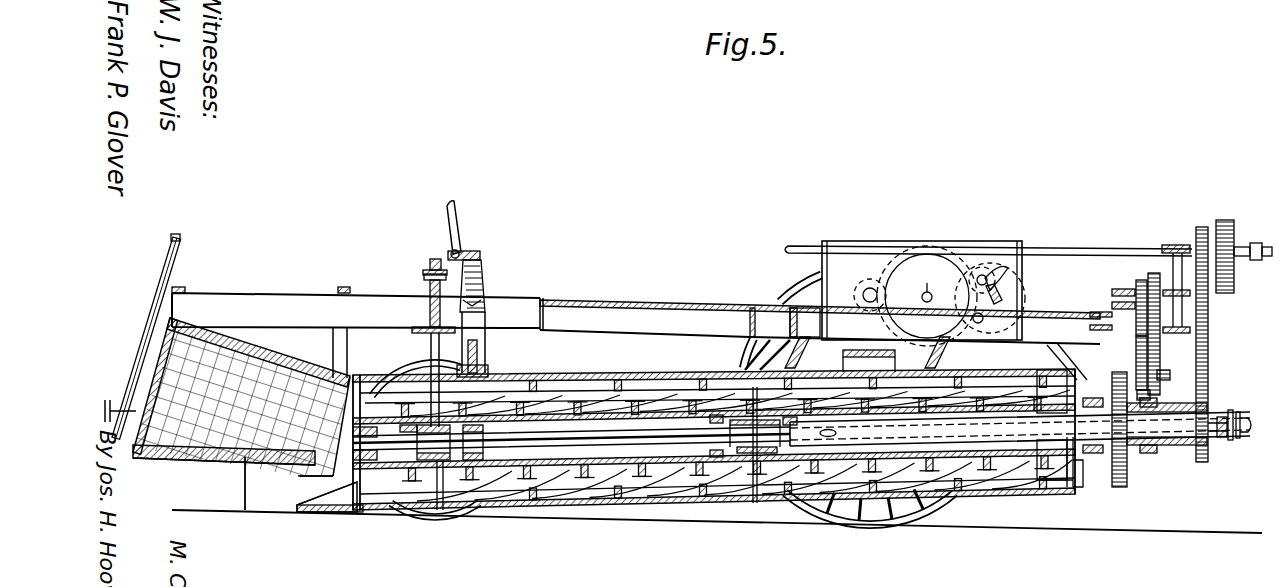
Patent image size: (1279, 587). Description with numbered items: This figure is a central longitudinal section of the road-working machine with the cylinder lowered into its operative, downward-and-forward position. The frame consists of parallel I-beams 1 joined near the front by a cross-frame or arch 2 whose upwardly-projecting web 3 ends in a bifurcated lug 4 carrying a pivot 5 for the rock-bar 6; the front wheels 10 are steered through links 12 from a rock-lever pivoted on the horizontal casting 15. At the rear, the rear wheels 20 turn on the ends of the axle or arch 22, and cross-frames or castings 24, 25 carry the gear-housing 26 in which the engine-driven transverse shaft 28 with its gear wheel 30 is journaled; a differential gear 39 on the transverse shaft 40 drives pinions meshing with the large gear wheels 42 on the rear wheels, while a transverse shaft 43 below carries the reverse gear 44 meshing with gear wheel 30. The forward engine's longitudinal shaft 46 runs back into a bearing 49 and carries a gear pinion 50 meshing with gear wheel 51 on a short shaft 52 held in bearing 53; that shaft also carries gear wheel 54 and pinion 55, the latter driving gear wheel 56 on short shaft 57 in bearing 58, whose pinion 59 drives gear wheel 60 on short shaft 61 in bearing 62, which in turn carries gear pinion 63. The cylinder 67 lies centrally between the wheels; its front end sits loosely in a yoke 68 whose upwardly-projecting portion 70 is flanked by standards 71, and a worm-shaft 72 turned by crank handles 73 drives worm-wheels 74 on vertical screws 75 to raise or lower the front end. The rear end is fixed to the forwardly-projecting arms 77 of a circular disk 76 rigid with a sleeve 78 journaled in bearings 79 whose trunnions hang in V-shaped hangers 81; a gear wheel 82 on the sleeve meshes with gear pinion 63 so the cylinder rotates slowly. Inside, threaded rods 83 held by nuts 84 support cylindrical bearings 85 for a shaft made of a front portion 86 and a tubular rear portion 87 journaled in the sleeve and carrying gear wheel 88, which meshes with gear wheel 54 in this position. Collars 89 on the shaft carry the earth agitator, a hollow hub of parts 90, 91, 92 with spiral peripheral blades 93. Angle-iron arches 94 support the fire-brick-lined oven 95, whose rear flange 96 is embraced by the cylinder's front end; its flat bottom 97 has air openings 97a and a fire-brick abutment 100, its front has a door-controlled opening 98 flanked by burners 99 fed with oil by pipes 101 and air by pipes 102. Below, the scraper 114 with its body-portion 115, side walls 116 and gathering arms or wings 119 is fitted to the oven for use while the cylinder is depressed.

The I-beams 1 is at (301, 300).
The cross-frame or arch 2 is at (418, 333).
The upwardly-projecting web 3 is at (425, 313).
The bifurcated lug 4 is at (424, 277).
The pivot 5 is at (430, 270).
The rock-bar 6 is at (438, 259).
The front wheels 10 is at (404, 512).
The links 12 is at (645, 346).
The casting 15 is at (622, 303).
The rear wheels 20 is at (930, 520).
The axle or arch 22 is at (843, 353).
The cross-frame or casting 24 is at (790, 320).
The cross-frame or casting 25 is at (1060, 312).
The gear-housing 26 is at (828, 243).
The transverse shaft 28 is at (997, 268).
The gear wheel 30 is at (982, 275).
The differential gear 39 is at (927, 296).
The transverse shaft 40 is at (864, 291).
The large gear wheels 42 is at (750, 322).
The transverse shaft 43 is at (983, 320).
The reverse gear 44 is at (1002, 296).
The engine shaft 46 is at (790, 246).
The bearing 49 is at (1200, 227).
The gear pinion 50 is at (1225, 220).
The gear wheel 51 is at (1225, 279).
The short shaft 52 is at (1231, 391).
The bearing 53 is at (1232, 410).
The gear wheel 54 is at (1252, 415).
The pinion 55 is at (1167, 376).
The gear wheel 56 is at (1154, 273).
The short shaft 57 is at (1113, 302).
The bearing 58 is at (1122, 289).
The pinion 59 is at (1140, 280).
The gear wheel 60 is at (1133, 358).
The short shaft 61 is at (1152, 392).
The bearing 62 is at (1096, 304).
The gear pinion 63 is at (1102, 333).
The cylinder 67 is at (664, 500).
The yoke 68 is at (490, 372).
The upwardly-projecting portion 70 is at (478, 350).
The standards 71 is at (484, 282).
The worm-shaft 72 is at (462, 251).
The crank handles 73 is at (452, 205).
The worm-wheels 74 is at (478, 262).
The vertical screws 75 is at (562, 263).
The circular disk 76 is at (1076, 497).
The forwardly-projecting arms 77 is at (1058, 490).
The sleeve 78 is at (1190, 447).
The bearings 79 is at (1095, 455).
The V-shaped hangers 81 is at (1052, 350).
The gear wheel 82 is at (1120, 488).
The threaded rods 83 is at (441, 512).
The nuts 84 is at (452, 508).
The cylindrical bearings 85 is at (425, 462).
The front shaft portion 86 is at (558, 445).
The rear shaft portion 87 is at (863, 447).
The gear wheel 88 is at (1222, 440).
The collars 89 is at (307, 474).
The hub part 90 is at (357, 478).
The hub part 91 is at (614, 470).
The hub part 92 is at (972, 455).
The peripheral blades 93 is at (646, 478).
The angle-iron arches 94 is at (182, 287).
The oven 95 is at (322, 337).
The flange 96 is at (355, 376).
The flat bottom 97 is at (200, 450).
The openings 97a is at (212, 450).
The door-controlled opening 98 is at (241, 402).
The burners 99 is at (165, 445).
The fire-brick abutment 100 is at (240, 467).
The pipes 101 is at (161, 334).
The pipes 102 is at (125, 377).
The scraper 114 is at (320, 512).
The body-portion 115 is at (332, 510).
The side walls 116 is at (278, 484).
The gathering arms or wings 119 is at (245, 510).